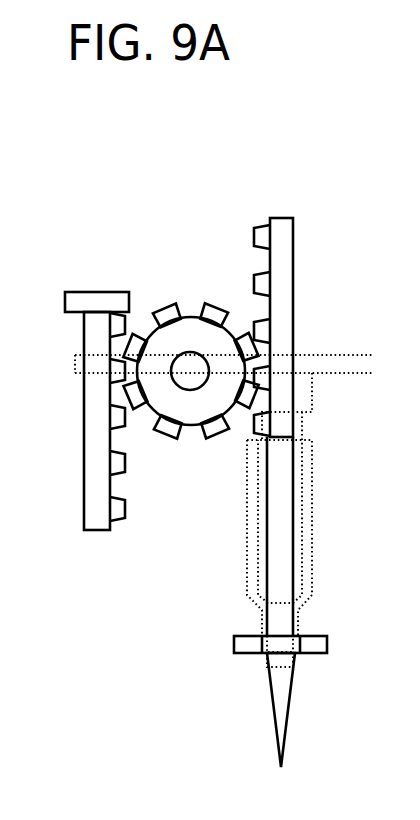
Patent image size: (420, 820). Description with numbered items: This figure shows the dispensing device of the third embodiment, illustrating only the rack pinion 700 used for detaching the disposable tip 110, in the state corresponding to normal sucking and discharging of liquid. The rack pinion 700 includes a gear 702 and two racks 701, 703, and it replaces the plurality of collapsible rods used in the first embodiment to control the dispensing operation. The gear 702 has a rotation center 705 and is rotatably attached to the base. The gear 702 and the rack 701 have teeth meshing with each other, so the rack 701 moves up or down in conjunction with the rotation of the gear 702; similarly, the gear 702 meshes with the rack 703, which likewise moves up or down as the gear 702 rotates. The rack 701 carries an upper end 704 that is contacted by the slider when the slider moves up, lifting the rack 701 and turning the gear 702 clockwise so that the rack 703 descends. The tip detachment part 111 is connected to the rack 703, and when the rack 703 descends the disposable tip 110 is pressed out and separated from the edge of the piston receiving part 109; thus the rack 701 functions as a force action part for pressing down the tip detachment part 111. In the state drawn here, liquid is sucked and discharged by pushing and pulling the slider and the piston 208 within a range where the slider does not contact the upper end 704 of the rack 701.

The rack pinion 700 is at (158, 195).
The rack 701 is at (92, 485).
The gear 702 is at (165, 313).
The rack 703 is at (285, 306).
The upper end of the rack 704 is at (86, 298).
The rotation center 705 is at (195, 378).
The piston 208 is at (300, 492).
The piston receiving part 109 is at (313, 538).
The tip detachment part 111 is at (317, 647).
The disposable tip 110 is at (290, 710).